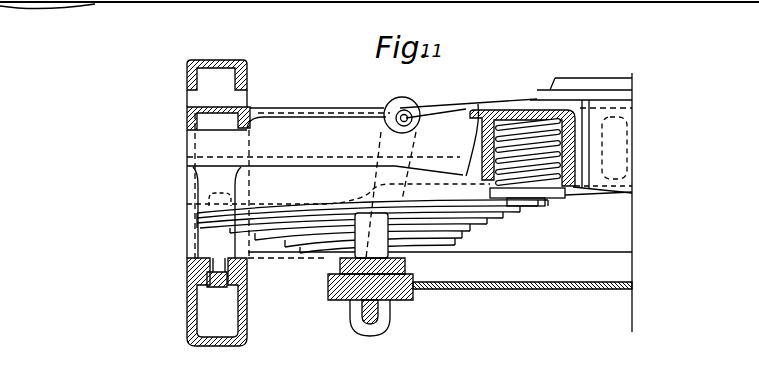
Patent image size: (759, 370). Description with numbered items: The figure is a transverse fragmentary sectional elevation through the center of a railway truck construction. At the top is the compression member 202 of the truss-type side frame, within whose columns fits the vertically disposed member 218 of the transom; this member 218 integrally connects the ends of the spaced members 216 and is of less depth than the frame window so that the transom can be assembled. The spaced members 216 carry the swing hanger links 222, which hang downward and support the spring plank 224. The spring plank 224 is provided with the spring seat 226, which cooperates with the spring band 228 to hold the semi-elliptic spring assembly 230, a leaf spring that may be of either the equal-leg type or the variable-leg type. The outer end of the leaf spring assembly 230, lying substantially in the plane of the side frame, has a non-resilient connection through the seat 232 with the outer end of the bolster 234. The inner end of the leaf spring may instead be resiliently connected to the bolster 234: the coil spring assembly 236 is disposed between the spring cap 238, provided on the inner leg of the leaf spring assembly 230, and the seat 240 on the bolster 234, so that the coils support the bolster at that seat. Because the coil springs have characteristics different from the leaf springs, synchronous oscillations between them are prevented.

The compression member 202 is at (212, 60).
The vertically disposed member 218 is at (187, 122).
The spaced members 216 is at (289, 112).
The bolster 234 is at (340, 123).
The coil spring assembly 236 is at (503, 123).
The seat 240 is at (527, 120).
The spring cap 238 is at (540, 198).
The swing hanger links 222 is at (400, 200).
The seat 232 is at (208, 202).
The spring band 228 is at (322, 248).
The spring seat 226 is at (335, 270).
The semi-elliptic spring assembly 230 is at (452, 228).
The spring plank 224 is at (568, 290).